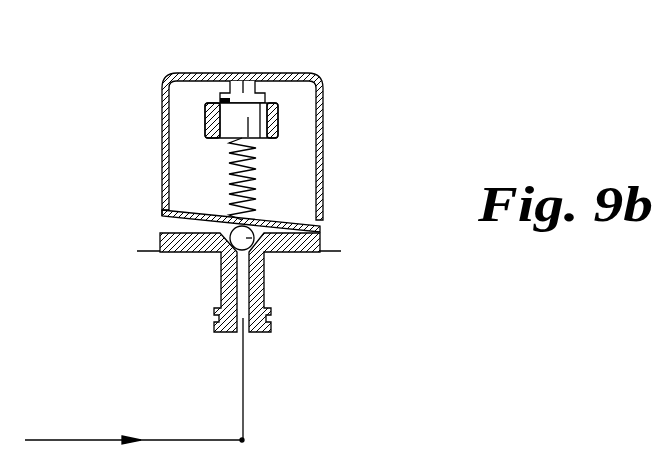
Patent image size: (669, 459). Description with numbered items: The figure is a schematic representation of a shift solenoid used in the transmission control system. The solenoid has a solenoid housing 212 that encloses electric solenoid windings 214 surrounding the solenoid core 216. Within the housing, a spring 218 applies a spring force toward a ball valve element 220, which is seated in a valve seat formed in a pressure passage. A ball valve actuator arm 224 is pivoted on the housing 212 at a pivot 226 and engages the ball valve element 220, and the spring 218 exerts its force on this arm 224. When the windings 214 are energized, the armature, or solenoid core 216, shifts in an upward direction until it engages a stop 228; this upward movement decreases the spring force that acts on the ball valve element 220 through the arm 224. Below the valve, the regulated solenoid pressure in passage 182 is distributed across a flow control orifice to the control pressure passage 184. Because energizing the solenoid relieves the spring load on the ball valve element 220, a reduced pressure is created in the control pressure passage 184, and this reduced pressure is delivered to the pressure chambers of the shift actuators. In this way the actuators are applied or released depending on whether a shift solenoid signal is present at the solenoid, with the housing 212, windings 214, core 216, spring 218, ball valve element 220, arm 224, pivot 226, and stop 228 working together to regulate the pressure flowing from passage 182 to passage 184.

The regulated solenoid pressure passage 182 is at (100, 438).
The control pressure passage 184 is at (243, 409).
The solenoid housing 212 is at (323, 150).
The electric solenoid windings 214 is at (281, 122).
The solenoid core 216 is at (247, 103).
The spring 218 is at (258, 178).
The ball valve element 220 is at (252, 239).
The ball valve actuator arm 224 is at (290, 216).
The pivot 226 is at (162, 214).
The stop 228 is at (222, 102).